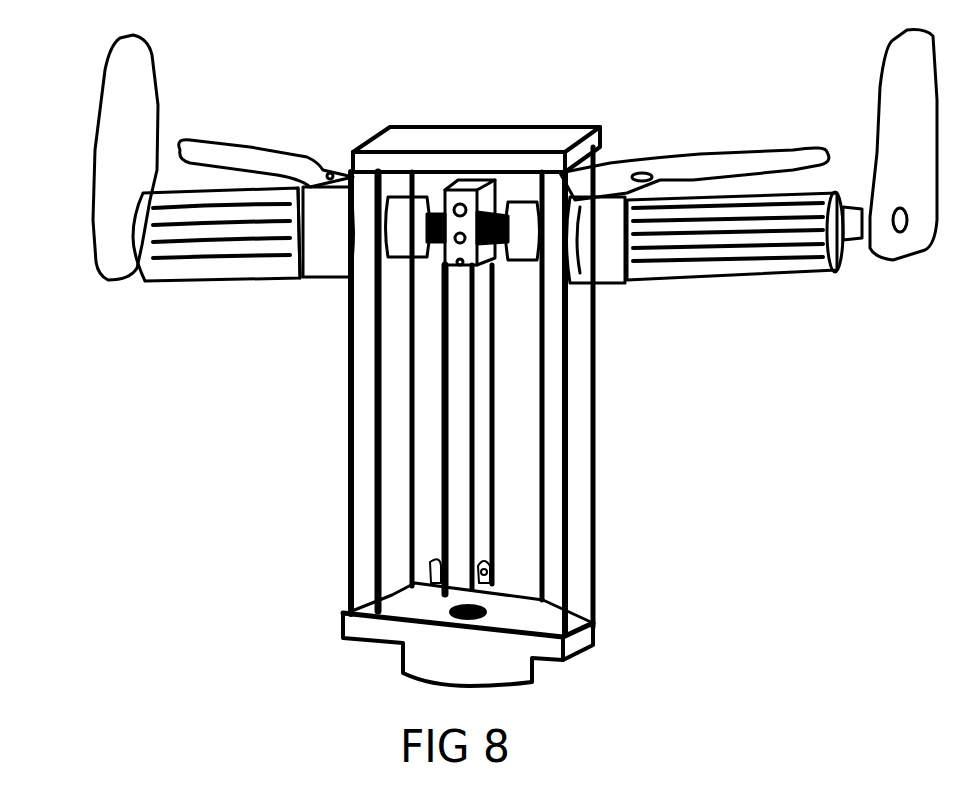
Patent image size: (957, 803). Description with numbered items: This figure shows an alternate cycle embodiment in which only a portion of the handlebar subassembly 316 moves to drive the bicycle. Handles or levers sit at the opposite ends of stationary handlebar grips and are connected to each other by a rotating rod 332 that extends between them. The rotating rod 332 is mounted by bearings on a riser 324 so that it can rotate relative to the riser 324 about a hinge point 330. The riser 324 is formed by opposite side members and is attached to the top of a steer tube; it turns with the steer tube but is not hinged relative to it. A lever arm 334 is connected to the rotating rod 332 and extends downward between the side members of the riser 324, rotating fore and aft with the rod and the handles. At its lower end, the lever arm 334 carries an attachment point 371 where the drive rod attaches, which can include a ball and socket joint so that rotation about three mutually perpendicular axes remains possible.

The handlebar subassembly 316 is at (338, 131).
The riser 324 is at (587, 423).
The hinge point 330 is at (497, 210).
The rotating rod 332 is at (437, 200).
The lever arm 334 is at (450, 462).
The attachment point 371 is at (497, 575).